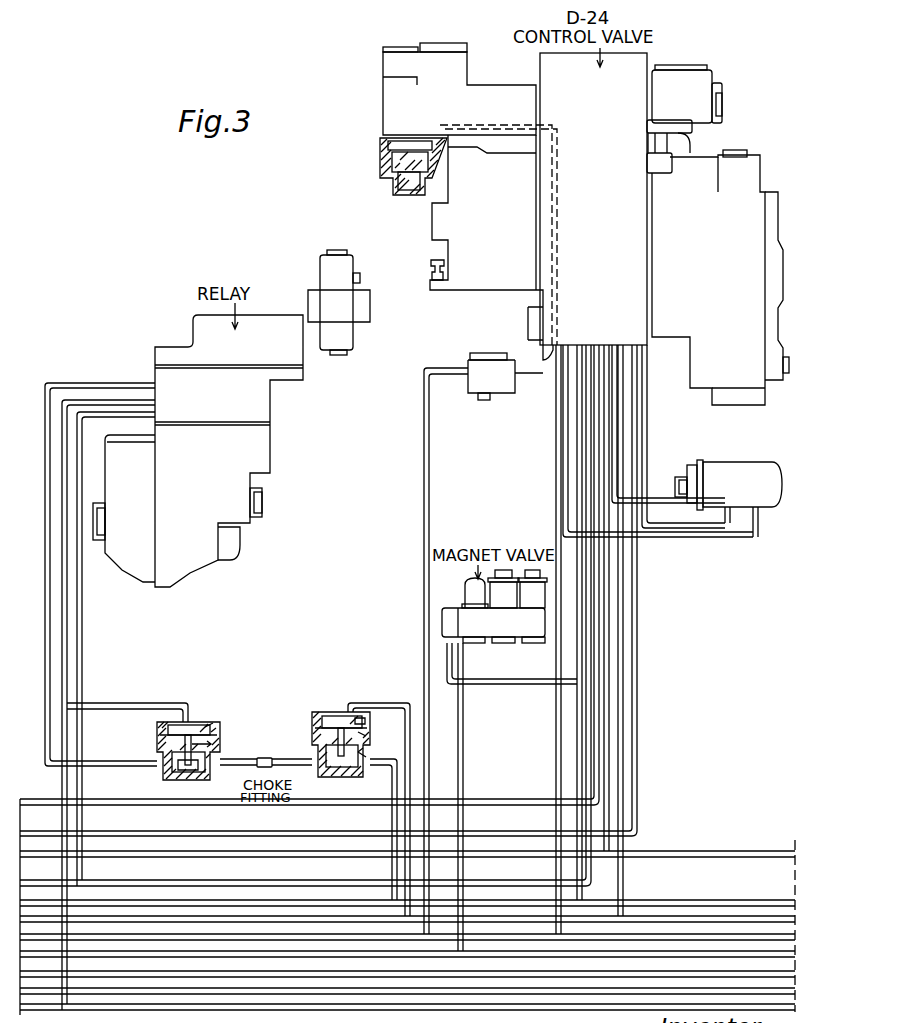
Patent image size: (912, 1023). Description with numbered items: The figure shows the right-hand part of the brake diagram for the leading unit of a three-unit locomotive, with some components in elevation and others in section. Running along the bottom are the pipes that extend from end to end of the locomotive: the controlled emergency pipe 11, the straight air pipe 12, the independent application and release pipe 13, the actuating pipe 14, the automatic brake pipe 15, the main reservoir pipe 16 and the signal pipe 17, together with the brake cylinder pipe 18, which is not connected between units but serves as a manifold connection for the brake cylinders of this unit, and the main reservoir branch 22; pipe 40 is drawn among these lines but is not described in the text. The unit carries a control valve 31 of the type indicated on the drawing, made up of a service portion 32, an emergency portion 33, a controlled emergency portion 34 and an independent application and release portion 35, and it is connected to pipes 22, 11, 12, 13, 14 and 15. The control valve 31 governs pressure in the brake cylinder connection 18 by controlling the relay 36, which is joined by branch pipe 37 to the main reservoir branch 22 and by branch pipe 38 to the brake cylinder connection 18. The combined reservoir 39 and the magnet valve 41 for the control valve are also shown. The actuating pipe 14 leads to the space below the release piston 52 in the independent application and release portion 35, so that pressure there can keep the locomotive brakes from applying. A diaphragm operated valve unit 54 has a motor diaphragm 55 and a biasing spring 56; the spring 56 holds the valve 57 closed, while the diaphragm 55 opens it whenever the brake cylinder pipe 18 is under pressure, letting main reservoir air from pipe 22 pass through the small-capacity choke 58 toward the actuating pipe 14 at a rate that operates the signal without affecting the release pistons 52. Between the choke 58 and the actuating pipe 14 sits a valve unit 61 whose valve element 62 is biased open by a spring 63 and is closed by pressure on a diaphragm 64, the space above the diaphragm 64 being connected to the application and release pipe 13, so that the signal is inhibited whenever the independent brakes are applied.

The controlled emergency pipe 11 is at (228, 848).
The straight air pipe 12 is at (162, 912).
The independent application and release pipe 13 is at (197, 928).
The actuating pipe 14 is at (222, 947).
The automatic brake pipe 15 is at (252, 963).
The main reservoir pipe 16 is at (275, 982).
The signal pipe 17 is at (300, 1000).
The brake cylinder pipe 18 is at (332, 1017).
The main reservoir branch 22 is at (130, 808).
The control valve 31 is at (554, 75).
The service portion 32 is at (720, 277).
The emergency portion 33 is at (491, 247).
The controlled emergency portion 34 is at (684, 119).
The independent application and release portion 35 is at (459, 89).
The relay 36 is at (231, 418).
The branch pipe 37 is at (46, 620).
The branch pipe 38 is at (66, 650).
The combined reservoir 39 is at (745, 460).
The pipe 40 is at (330, 885).
The magnet valve 41 is at (509, 760).
The release piston 52 is at (395, 178).
The diaphragm operated valve unit 54 is at (203, 712).
The motor diaphragm 55 is at (206, 726).
The biasing spring 56 is at (212, 744).
The valve 57 is at (190, 772).
The choke 58 is at (264, 758).
The valve unit 61 is at (331, 712).
The valve element 62 is at (367, 757).
The spring 63 is at (366, 736).
The diaphragm 64 is at (360, 718).